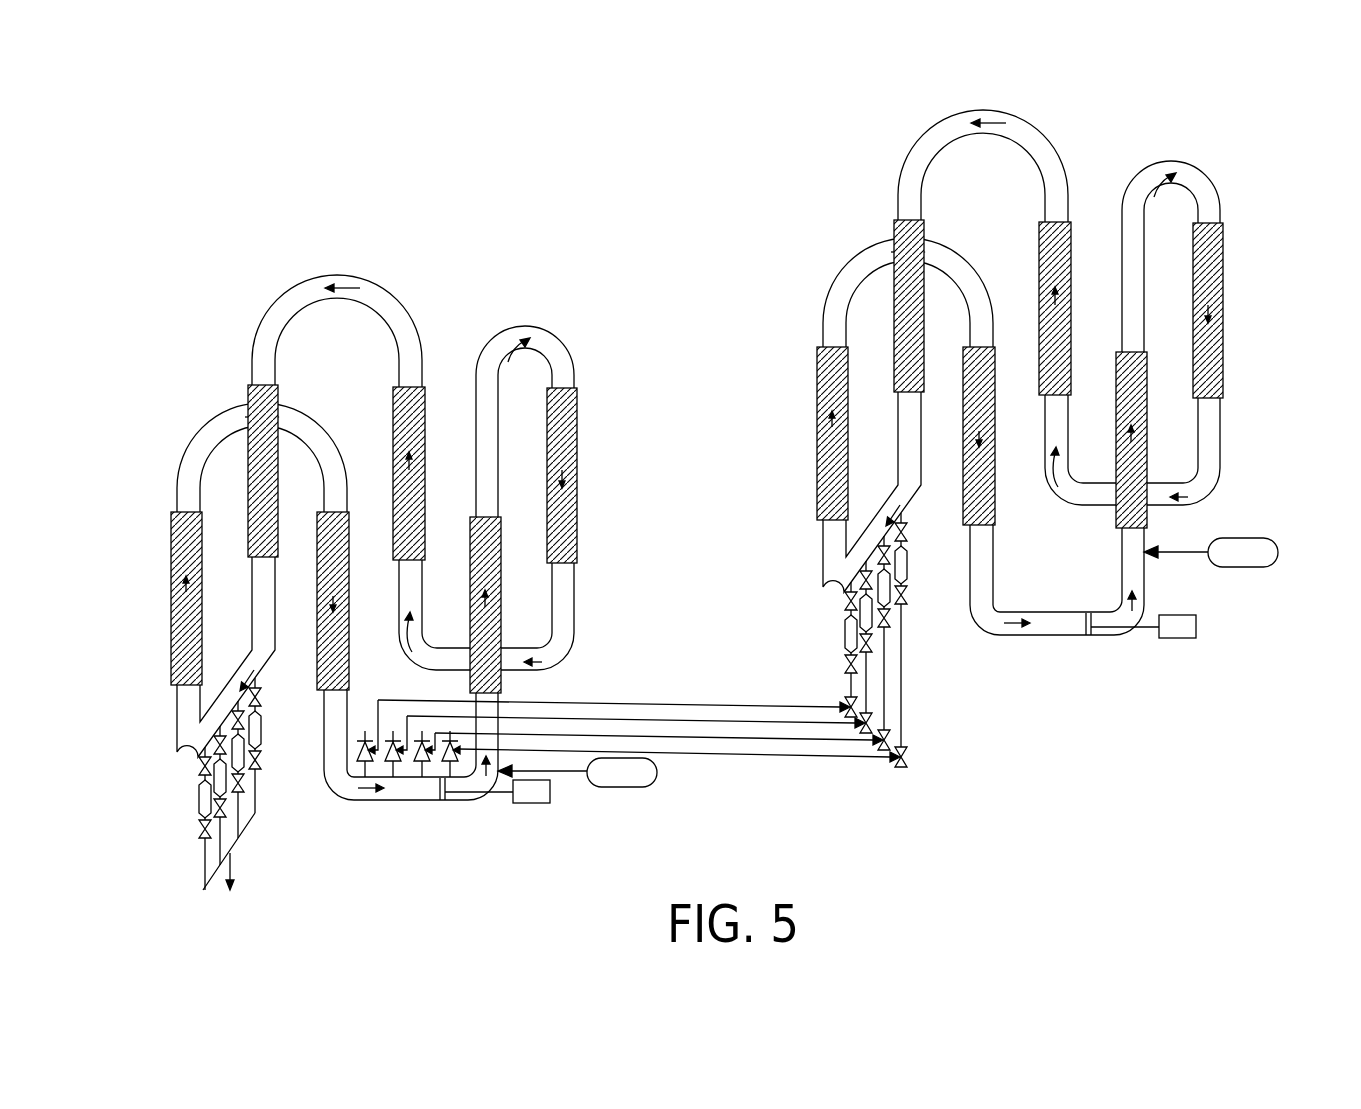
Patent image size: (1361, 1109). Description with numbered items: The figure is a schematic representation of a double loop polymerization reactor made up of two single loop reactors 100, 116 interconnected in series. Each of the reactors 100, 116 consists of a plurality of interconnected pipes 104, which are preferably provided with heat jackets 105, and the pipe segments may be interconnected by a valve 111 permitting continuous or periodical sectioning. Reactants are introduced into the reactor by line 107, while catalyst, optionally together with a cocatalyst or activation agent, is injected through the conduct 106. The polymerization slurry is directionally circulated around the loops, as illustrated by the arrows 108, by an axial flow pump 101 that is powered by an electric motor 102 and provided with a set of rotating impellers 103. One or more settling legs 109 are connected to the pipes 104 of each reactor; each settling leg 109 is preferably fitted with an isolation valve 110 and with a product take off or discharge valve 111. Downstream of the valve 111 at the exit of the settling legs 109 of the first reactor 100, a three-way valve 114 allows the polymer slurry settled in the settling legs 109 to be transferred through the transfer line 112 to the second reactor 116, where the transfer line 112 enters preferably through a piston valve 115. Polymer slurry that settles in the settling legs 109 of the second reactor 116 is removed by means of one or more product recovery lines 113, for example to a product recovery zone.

The single loop reactor 100 is at (1281, 189).
The axial flow pump 101 is at (463, 803).
The electric motor 102 is at (535, 803).
The set of rotating impellers 103 is at (437, 805).
The interconnected pipes 104 is at (572, 610).
The heat jackets 105 is at (578, 490).
The conduct 106 is at (378, 808).
The line 107 is at (571, 773).
The arrows 108 is at (508, 357).
The settling legs 109 is at (198, 800).
The isolation valve 110 is at (261, 700).
The product take off or discharge valve 111 is at (262, 770).
The transfer line 112 is at (671, 702).
The product recovery lines 113 is at (229, 866).
The three-way valve 114 is at (908, 762).
The piston valve 115 is at (366, 735).
The single loop reactor 116 is at (632, 344).